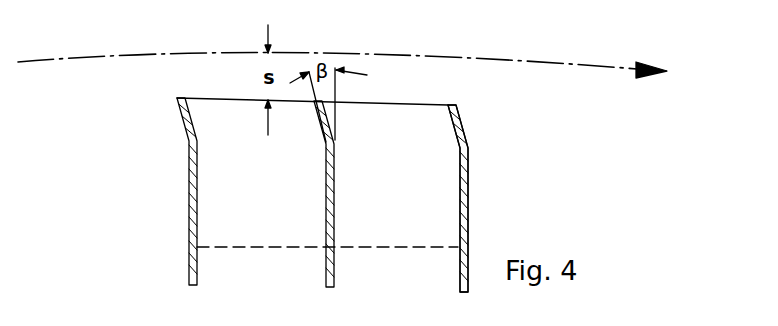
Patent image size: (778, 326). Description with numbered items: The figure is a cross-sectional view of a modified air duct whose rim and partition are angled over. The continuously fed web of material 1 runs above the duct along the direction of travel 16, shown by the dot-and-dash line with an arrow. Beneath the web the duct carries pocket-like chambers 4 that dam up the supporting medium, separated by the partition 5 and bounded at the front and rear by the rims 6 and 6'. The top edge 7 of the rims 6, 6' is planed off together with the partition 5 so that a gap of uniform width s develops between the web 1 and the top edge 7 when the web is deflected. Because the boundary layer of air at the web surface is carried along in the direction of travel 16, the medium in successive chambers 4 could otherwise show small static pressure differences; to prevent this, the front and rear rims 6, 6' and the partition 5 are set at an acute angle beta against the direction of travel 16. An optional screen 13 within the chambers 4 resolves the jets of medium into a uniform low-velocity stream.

The web of material 1 is at (389, 54).
The direction of travel 16 is at (630, 67).
The top edge 7 is at (420, 103).
The pocket-like chamber 4 is at (427, 140).
The front rim 6 is at (179, 191).
The partition 5 is at (326, 186).
The rear rim 6' is at (477, 198).
The screen 13 is at (445, 247).